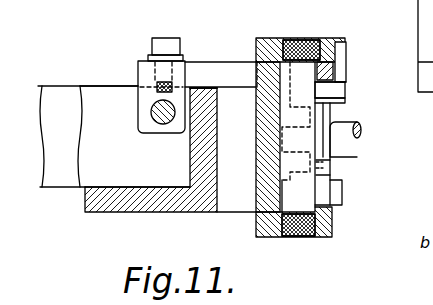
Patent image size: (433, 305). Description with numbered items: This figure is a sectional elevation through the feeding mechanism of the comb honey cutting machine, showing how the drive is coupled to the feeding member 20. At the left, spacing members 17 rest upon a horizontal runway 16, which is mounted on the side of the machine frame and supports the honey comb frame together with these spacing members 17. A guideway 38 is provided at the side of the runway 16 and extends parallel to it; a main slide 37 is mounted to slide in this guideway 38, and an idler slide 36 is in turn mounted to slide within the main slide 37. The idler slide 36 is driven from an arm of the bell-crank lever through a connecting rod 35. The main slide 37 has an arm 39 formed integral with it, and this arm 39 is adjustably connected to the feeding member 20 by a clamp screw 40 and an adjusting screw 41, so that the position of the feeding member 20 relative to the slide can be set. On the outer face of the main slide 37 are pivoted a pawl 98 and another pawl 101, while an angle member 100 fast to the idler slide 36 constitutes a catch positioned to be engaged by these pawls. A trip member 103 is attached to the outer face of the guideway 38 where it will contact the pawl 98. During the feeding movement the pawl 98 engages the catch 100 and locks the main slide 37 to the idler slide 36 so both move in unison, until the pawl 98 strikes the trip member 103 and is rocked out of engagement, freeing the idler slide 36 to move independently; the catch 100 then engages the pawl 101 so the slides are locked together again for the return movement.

The spacing member 17 is at (58, 175).
The feeding member 20 is at (122, 163).
The horizontal runway 16 is at (153, 197).
The arm 39 is at (210, 72).
The clamp screw 40 is at (168, 48).
The adjusting screw 41 is at (150, 112).
The guideway 38 is at (297, 240).
The trip member 103 is at (340, 72).
The pawl 98 is at (340, 98).
The angle member 100 is at (330, 112).
The connecting rod 35 is at (352, 146).
The idler slide 36 is at (316, 168).
The pawl 101 is at (323, 183).
The main slide 37 is at (300, 193).